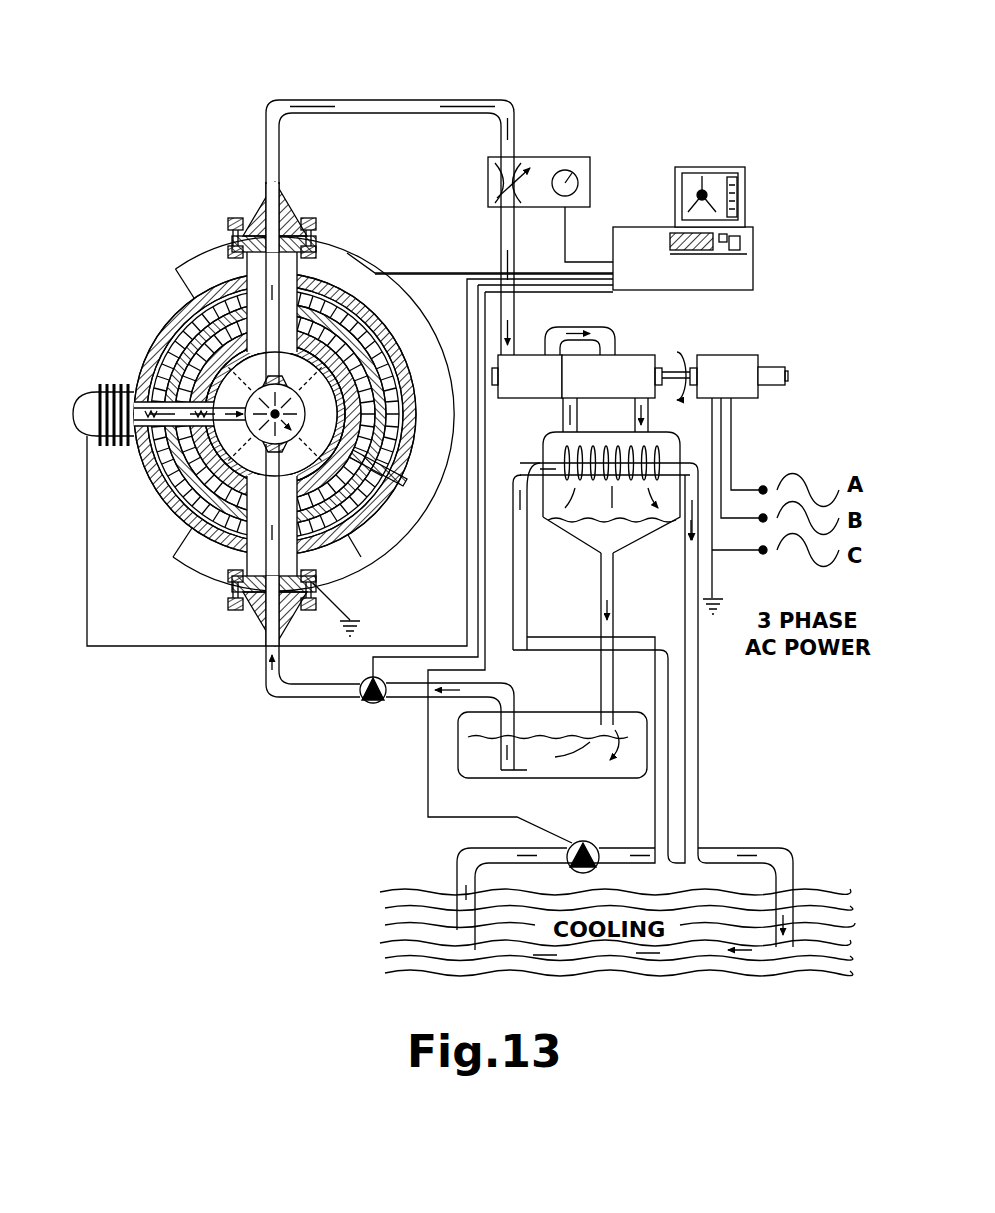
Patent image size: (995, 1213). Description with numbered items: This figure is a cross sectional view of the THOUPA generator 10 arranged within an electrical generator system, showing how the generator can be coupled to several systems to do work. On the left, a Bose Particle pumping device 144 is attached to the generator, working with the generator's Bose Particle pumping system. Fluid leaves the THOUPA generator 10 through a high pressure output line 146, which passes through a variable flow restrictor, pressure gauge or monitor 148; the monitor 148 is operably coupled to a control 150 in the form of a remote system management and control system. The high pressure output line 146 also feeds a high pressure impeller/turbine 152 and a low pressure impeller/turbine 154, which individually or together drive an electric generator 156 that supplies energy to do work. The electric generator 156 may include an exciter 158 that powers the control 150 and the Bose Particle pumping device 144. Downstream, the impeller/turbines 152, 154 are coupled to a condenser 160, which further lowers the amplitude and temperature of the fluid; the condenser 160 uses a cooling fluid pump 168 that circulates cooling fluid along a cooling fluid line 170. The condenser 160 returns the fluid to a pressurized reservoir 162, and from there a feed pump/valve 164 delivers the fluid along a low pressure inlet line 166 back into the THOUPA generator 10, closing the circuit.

The THOUPA generator 10 is at (126, 316).
The Bose Particle pumping device 144 is at (76, 390).
The high pressure output line 146 is at (336, 97).
The pressure gauge or monitor 148 is at (557, 152).
The control 150 is at (755, 222).
The high pressure impeller/turbine 152 is at (524, 352).
The low pressure impeller/turbine 154 is at (644, 352).
The electric generator 156 is at (763, 400).
The exciter 158 is at (779, 362).
The condenser 160 is at (570, 532).
The pressurized reservoir 162 is at (565, 710).
The feed pump/valve 164 is at (364, 705).
The low pressure inlet line 166 is at (265, 658).
The cooling fluid pump 168 is at (597, 838).
The cooling fluid line 170 is at (703, 775).